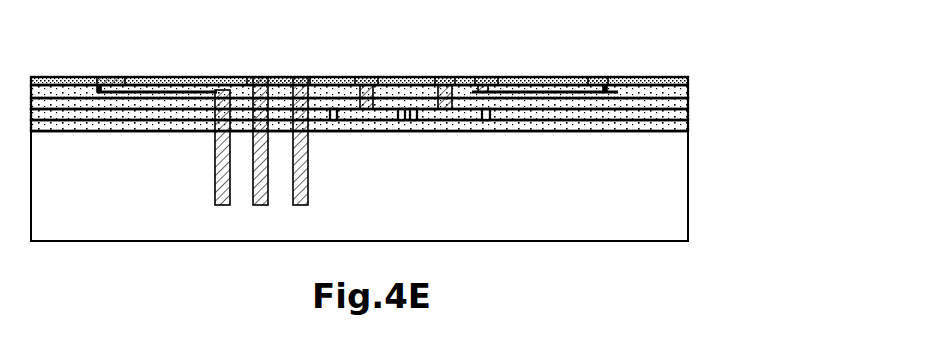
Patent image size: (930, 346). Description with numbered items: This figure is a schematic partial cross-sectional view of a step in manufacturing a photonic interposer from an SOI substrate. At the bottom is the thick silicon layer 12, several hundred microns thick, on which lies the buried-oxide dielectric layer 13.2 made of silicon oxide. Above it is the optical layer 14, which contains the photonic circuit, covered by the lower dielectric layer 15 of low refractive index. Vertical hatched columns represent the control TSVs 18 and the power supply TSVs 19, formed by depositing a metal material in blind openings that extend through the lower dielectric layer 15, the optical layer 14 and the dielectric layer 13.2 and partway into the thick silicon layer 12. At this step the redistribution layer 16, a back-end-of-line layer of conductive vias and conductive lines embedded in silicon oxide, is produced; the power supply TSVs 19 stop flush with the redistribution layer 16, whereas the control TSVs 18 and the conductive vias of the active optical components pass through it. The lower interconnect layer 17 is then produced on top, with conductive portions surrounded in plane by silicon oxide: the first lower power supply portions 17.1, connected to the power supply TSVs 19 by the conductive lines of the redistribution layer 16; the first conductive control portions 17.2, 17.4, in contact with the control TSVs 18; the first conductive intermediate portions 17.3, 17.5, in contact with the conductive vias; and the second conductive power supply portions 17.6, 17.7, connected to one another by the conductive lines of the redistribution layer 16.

The thick silicon layer 12 is at (690, 187).
The dielectric layer 13.2 is at (690, 126).
The optical layer 14 is at (690, 114).
The lower dielectric layer 15 is at (690, 103).
The redistribution layer 16 is at (690, 90).
The lower interconnect layer 17 is at (690, 81).
The first lower power supply portions 17.1 is at (110, 76).
The first conductive control portions 17.2 is at (258, 76).
The first conductive intermediate portions 17.3 is at (366, 76).
The first conductive control portions 17.4 is at (325, 114).
The first conductive intermediate portions 17.5 is at (446, 76).
The second conductive power supply portions 17.6 is at (600, 76).
The second conductive power supply portions 17.7 is at (486, 76).
The control TSVs 18 is at (310, 172).
The power supply TSVs 19 is at (213, 173).